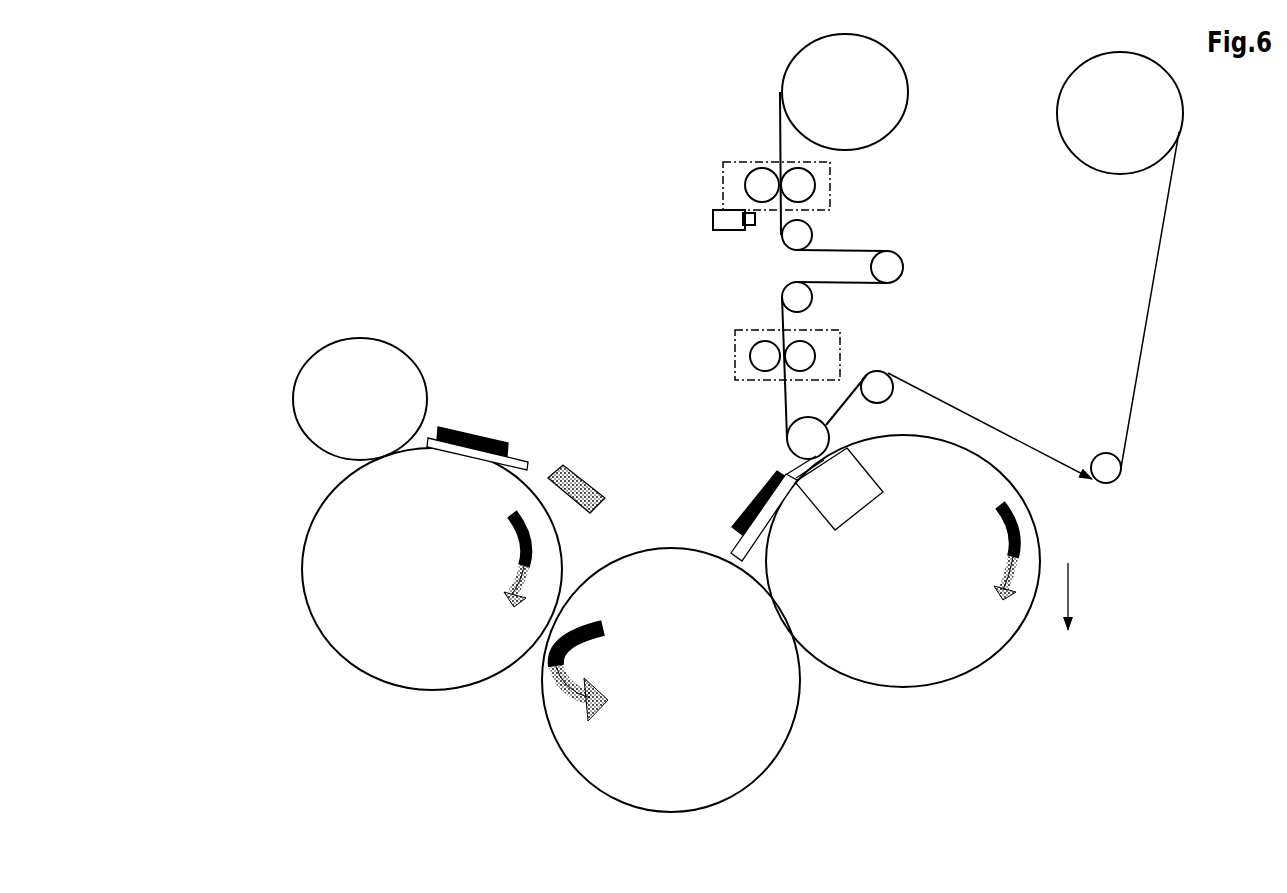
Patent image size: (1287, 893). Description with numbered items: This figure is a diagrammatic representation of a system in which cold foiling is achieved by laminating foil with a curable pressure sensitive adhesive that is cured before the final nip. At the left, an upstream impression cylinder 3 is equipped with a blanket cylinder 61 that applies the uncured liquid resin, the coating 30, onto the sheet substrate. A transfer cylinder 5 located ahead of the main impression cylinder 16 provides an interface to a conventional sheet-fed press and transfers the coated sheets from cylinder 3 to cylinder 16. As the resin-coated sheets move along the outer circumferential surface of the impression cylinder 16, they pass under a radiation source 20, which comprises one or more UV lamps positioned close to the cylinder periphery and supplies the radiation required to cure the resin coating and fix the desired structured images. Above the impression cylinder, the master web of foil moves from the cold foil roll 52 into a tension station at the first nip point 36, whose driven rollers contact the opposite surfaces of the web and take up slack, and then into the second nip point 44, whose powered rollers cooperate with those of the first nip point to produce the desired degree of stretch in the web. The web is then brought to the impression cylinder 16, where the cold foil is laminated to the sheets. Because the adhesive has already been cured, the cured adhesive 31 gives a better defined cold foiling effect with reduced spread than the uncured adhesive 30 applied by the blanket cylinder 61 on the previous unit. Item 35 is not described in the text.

The impression cylinder 3 is at (313, 620).
The transfer cylinder 5 is at (548, 728).
The impression cylinder 16 is at (978, 612).
The radiation source 20 is at (560, 458).
The coating 30 is at (488, 437).
The cured adhesive 31 is at (738, 508).
The take-up roll 35 is at (1183, 85).
The first nip point 36 is at (775, 168).
The second nip point 44 is at (842, 352).
The cold foil roll 52 is at (908, 92).
The blanket cylinder 61 is at (363, 338).